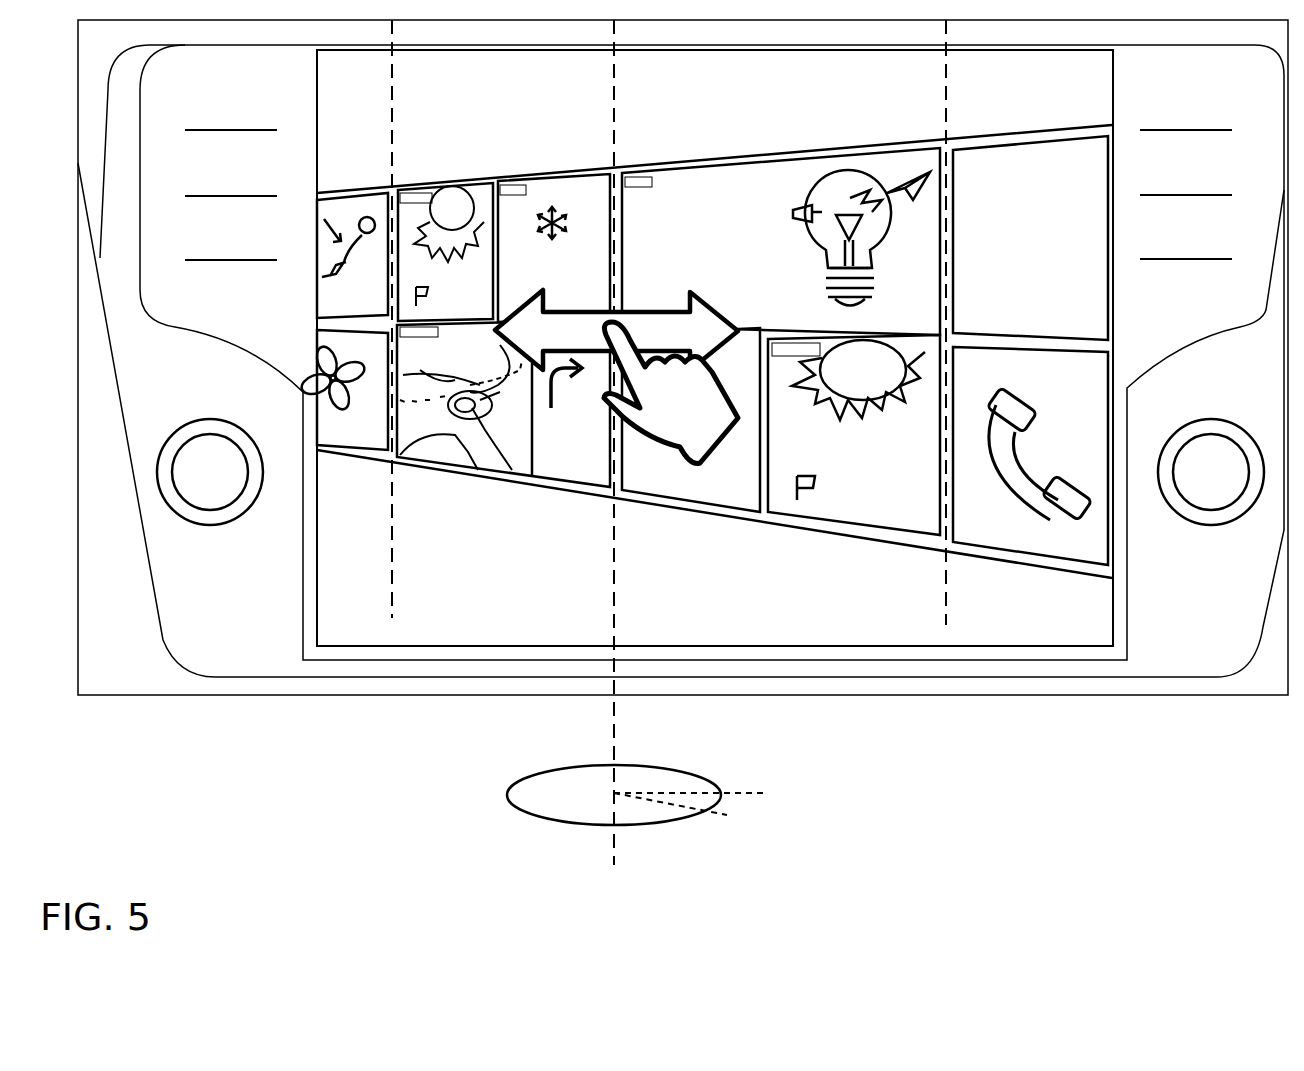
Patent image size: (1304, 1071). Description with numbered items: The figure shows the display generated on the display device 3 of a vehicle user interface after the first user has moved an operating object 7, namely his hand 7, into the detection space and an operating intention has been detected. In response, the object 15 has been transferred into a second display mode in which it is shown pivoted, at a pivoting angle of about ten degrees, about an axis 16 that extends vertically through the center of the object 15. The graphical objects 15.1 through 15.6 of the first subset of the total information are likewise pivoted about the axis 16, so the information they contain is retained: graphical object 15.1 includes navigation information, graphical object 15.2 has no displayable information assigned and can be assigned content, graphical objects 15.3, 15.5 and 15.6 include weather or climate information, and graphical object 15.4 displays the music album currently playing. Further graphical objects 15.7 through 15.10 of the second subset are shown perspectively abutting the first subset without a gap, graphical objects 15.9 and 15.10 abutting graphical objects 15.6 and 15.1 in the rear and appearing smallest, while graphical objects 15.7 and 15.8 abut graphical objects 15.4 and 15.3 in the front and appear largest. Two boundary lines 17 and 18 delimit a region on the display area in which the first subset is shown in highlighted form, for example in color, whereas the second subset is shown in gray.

The display device 3 is at (1023, 625).
The operating object (hand) 7 is at (690, 413).
The object 15 is at (662, 500).
The graphical object 15.1 is at (445, 443).
The graphical object 15.2 is at (733, 498).
The graphical object 15.3 is at (877, 513).
The graphical object 15.4 is at (705, 193).
The graphical object 15.5 is at (575, 200).
The graphical object 15.6 is at (446, 268).
The graphical object 15.7 is at (995, 532).
The graphical object 15.8 is at (976, 180).
The graphical object 15.9 is at (338, 427).
The graphical object 15.10 is at (343, 210).
The axis 16 is at (614, 726).
The boundary line 17 is at (393, 623).
The boundary line 18 is at (946, 629).